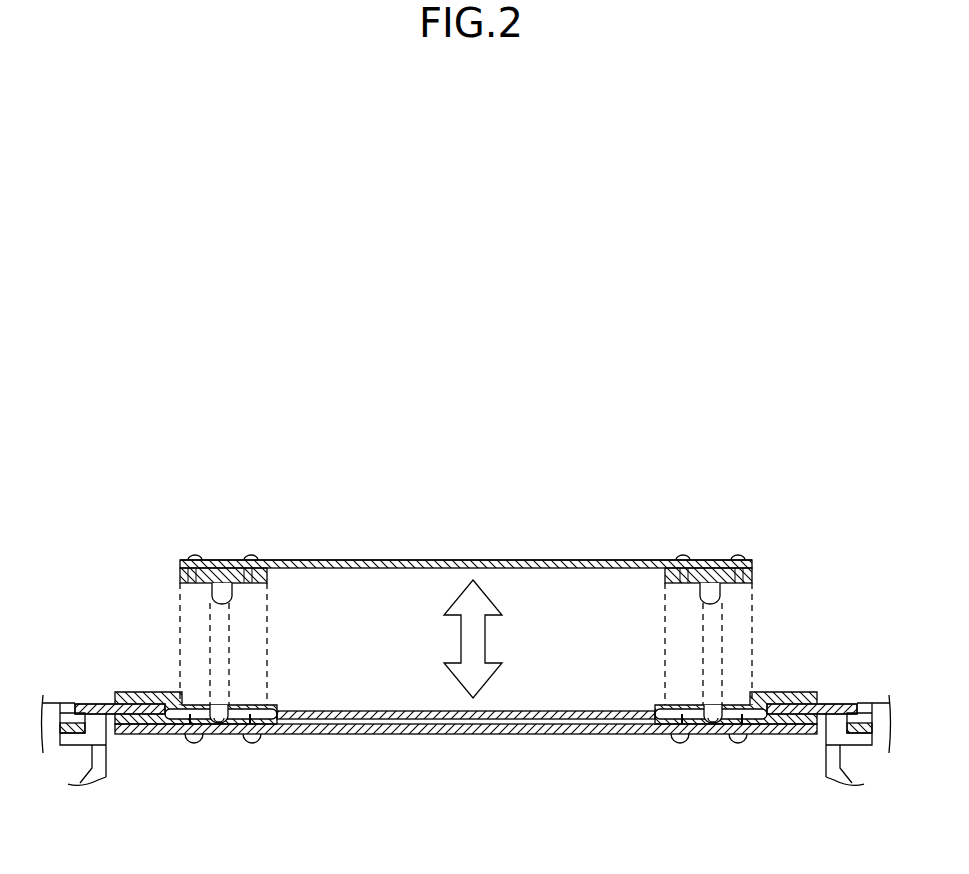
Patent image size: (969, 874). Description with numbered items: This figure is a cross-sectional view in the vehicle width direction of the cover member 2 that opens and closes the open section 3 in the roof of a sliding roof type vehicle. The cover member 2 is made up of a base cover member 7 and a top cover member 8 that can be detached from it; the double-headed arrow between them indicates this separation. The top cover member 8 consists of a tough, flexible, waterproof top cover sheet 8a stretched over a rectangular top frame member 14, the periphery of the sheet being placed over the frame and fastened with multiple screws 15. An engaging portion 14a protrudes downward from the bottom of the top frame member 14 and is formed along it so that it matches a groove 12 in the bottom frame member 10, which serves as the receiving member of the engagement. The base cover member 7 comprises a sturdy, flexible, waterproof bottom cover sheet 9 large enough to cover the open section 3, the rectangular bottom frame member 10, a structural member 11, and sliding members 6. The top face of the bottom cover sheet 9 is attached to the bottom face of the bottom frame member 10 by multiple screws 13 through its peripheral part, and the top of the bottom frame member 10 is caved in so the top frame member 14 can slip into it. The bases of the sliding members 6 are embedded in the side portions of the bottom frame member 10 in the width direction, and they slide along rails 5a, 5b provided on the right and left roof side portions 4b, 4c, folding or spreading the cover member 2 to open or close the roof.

The cover member 2 is at (808, 527).
The open section 3 is at (478, 774).
The roof side portion 4b is at (823, 785).
The roof side portion 4c is at (109, 785).
The rail 5a is at (880, 748).
The rail 5b is at (52, 748).
The sliding member 6 is at (80, 703).
The base cover member 7 is at (361, 748).
The top cover member 8 is at (436, 550).
The top cover sheet 8a is at (512, 560).
The bottom cover sheet 9 is at (577, 736).
The bottom frame member 10 is at (768, 692).
The structural member 11 is at (405, 720).
The groove 12 is at (220, 726).
The screw 13 is at (193, 746).
The top frame member 14 is at (225, 558).
The engaging portion 14a is at (213, 600).
The screw 15 is at (195, 556).